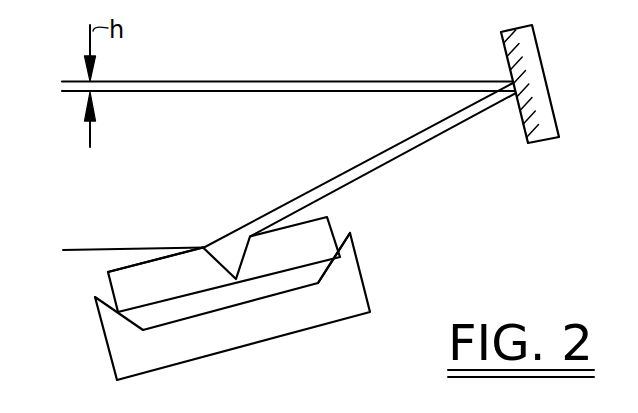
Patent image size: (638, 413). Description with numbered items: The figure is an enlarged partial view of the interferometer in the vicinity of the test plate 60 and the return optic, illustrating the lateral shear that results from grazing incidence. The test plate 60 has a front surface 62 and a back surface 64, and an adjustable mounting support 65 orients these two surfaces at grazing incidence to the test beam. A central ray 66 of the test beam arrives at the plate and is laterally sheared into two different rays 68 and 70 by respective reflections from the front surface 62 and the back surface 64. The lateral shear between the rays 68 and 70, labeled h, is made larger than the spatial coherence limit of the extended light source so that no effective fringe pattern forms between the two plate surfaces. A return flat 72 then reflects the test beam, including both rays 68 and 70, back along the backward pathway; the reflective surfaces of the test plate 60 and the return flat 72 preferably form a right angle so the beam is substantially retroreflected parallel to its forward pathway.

The test plate 60 is at (329, 218).
The front surface 62 is at (127, 262).
The back surface 64 is at (322, 262).
The adjustable mounting support 65 is at (137, 343).
The central ray 66 is at (90, 250).
The ray 68 is at (327, 80).
The ray 70 is at (242, 91).
The return flat 72 is at (500, 38).